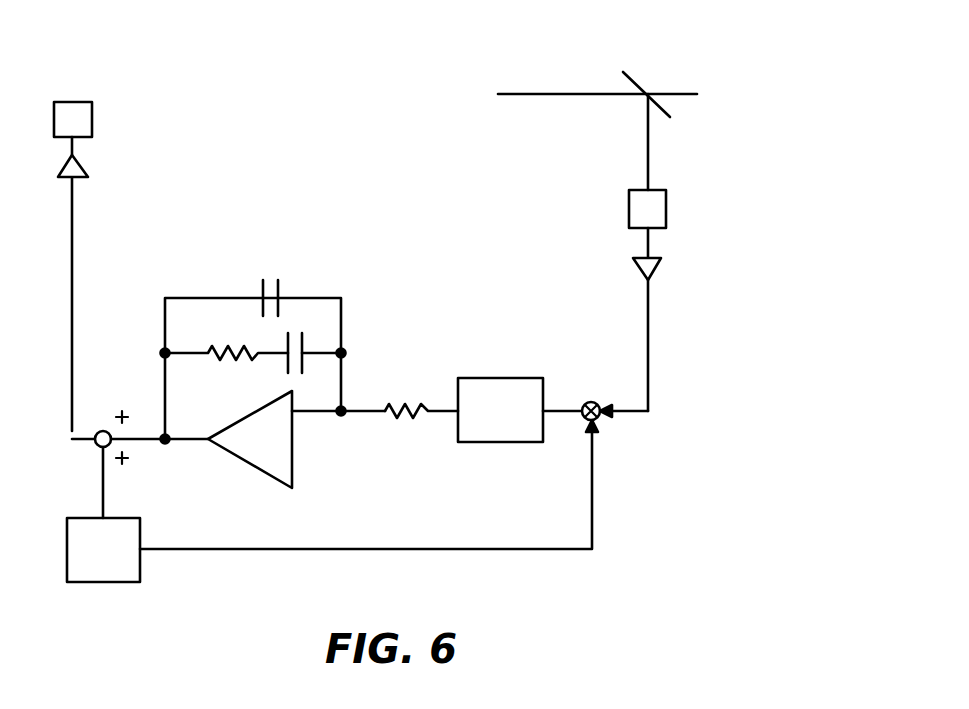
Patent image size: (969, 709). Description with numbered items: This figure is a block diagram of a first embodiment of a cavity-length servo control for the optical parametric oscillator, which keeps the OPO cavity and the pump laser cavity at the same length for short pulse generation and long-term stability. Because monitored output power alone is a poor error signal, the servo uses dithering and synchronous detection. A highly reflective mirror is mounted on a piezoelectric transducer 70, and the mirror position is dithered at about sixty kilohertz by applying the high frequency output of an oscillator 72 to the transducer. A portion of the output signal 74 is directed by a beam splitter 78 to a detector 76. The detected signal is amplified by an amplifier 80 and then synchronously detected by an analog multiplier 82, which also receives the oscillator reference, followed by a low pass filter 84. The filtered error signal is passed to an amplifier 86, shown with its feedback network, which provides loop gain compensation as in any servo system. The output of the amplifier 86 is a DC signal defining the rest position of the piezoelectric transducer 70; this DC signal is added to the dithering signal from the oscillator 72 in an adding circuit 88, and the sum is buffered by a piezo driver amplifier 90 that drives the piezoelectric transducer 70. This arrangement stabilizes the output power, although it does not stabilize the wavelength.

The piezoelectric transducer 70 is at (92, 112).
The piezo driver amplifier 90 is at (88, 168).
The adding circuit 88 is at (101, 431).
The oscillator 72 is at (100, 582).
The amplifier 86 is at (243, 458).
The low pass filter 84 is at (505, 378).
The analog multiplier 82 is at (591, 402).
The amplifier 80 is at (657, 266).
The detector 76 is at (666, 205).
The output signal 74 is at (648, 138).
The beam splitter 78 is at (638, 86).